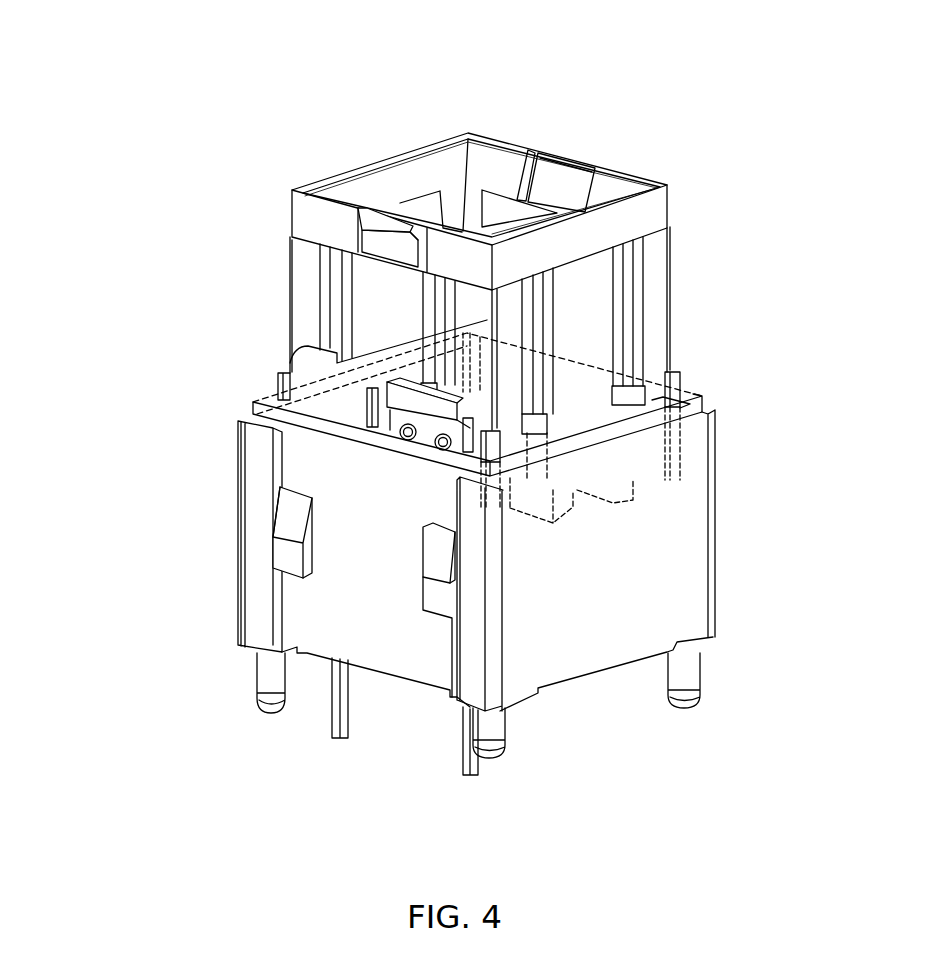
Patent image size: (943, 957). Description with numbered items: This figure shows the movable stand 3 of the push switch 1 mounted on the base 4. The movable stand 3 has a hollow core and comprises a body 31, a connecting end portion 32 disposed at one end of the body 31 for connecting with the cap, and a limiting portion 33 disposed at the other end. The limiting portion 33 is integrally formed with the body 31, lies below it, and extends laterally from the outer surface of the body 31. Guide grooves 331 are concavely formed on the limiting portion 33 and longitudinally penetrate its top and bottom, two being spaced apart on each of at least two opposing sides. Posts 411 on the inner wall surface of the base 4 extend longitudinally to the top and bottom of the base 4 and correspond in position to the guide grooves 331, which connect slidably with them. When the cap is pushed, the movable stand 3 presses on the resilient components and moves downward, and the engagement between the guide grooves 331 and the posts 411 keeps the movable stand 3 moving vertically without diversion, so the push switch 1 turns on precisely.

The push switch 1 is at (150, 88).
The movable stand 3 is at (355, 168).
The body 31 is at (307, 296).
The connecting end portion 32 is at (303, 217).
The limiting portion 33 is at (285, 375).
The guide grooves 331 is at (517, 437).
The base 4 is at (317, 468).
The posts 411 is at (683, 390).